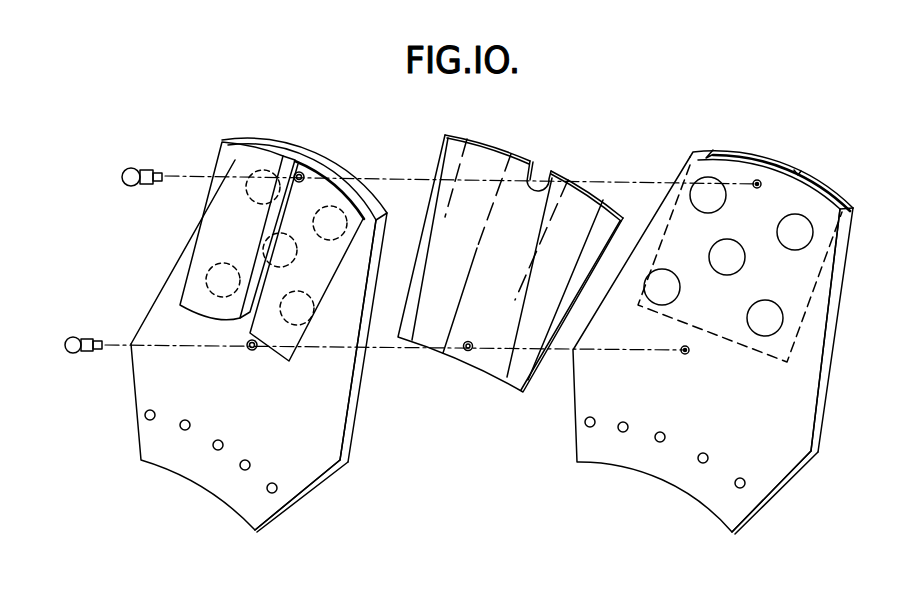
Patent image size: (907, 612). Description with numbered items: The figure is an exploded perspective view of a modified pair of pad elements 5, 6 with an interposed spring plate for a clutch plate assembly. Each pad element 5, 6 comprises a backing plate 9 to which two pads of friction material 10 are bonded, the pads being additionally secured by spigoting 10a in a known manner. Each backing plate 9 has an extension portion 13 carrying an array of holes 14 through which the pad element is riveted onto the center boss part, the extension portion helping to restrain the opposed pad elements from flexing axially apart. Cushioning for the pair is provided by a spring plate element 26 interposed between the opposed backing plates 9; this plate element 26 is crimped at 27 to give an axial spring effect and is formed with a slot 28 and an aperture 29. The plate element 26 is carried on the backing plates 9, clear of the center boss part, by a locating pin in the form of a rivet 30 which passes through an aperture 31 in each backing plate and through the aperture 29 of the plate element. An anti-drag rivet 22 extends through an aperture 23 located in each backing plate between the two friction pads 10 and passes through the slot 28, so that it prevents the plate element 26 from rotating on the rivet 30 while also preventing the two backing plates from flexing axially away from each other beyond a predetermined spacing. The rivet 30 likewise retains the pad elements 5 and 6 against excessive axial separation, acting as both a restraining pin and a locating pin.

The pad element 5 is at (160, 309).
The pad element 6 is at (836, 362).
The backing plate 9 is at (356, 420).
The pads of friction material 10 is at (210, 230).
The spigoting 10a is at (658, 300).
The extension portion 13 is at (302, 482).
The holes 14 is at (241, 470).
The anti-drag rivet 22 is at (133, 166).
The aperture 23 is at (301, 171).
The spring plate element 26 is at (444, 139).
The crimping 27 is at (508, 152).
The slot 28 is at (531, 160).
The aperture 29 is at (466, 353).
The rivet 30 is at (80, 335).
The aperture 31 is at (253, 352).